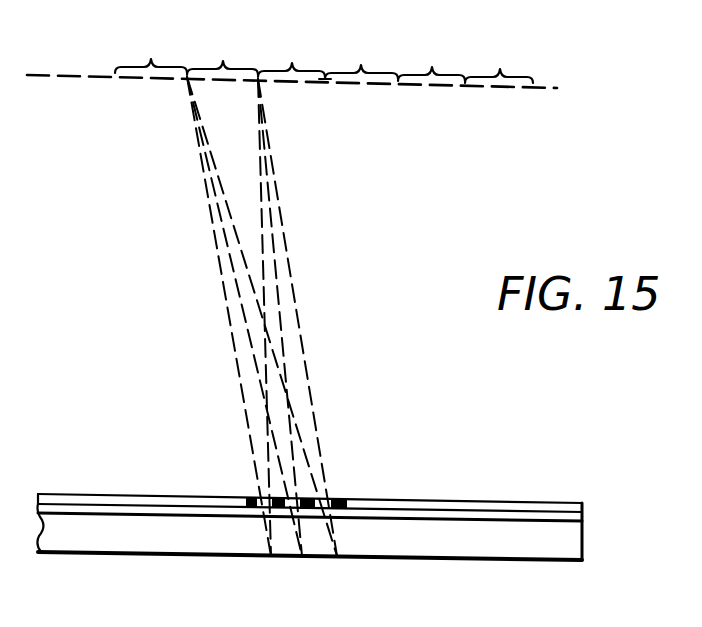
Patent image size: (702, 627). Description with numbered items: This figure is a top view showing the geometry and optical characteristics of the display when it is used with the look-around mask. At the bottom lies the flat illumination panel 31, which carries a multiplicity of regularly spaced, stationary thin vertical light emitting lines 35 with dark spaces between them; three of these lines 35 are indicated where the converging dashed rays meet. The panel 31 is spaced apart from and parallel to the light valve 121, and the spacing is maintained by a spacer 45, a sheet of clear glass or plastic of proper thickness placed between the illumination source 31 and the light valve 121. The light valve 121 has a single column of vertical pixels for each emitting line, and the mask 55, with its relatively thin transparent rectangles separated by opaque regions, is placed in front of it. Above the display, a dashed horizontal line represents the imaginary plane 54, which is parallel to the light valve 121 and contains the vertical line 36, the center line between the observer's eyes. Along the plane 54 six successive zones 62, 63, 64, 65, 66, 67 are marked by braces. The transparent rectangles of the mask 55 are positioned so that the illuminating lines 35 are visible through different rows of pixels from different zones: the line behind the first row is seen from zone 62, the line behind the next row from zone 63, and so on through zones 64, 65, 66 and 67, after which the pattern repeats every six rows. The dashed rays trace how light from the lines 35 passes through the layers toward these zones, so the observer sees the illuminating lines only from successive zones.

The illumination panel 31 is at (350, 529).
The light emitting lines 35 is at (337, 557).
The vertical line 36 is at (325, 78).
The spacer 45 is at (568, 550).
The imaginary plane 54 is at (548, 87).
The mask 55 is at (583, 503).
The zone 62 is at (151, 51).
The zone 63 is at (222, 54).
The zone 64 is at (291, 58).
The zone 65 is at (361, 59).
The zone 66 is at (431, 60).
The zone 67 is at (499, 63).
The light valve 121 is at (583, 516).